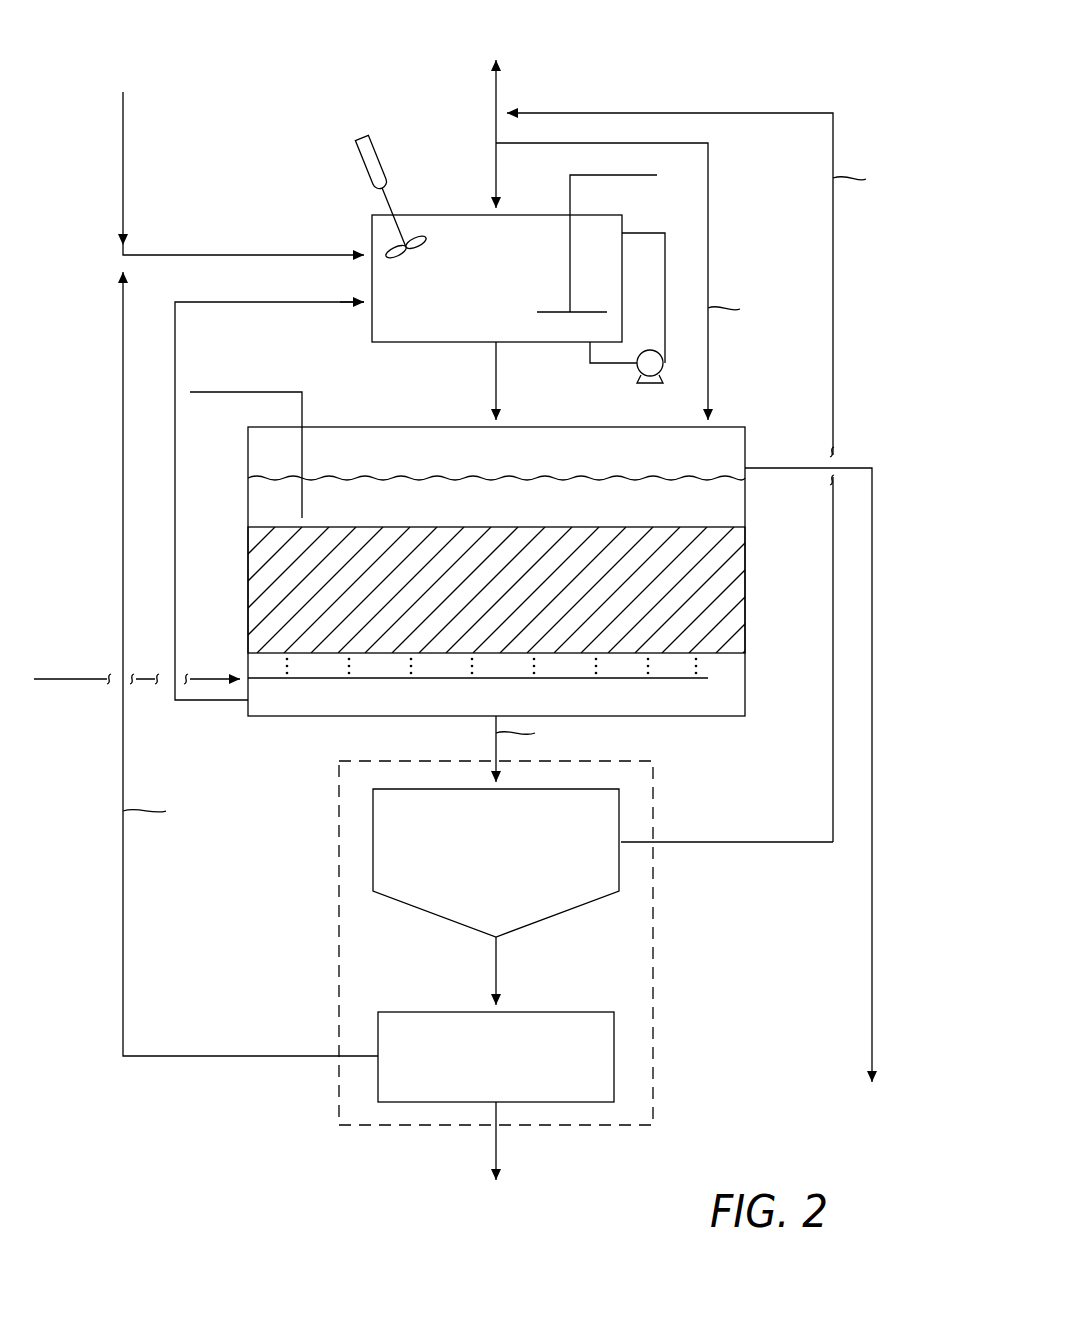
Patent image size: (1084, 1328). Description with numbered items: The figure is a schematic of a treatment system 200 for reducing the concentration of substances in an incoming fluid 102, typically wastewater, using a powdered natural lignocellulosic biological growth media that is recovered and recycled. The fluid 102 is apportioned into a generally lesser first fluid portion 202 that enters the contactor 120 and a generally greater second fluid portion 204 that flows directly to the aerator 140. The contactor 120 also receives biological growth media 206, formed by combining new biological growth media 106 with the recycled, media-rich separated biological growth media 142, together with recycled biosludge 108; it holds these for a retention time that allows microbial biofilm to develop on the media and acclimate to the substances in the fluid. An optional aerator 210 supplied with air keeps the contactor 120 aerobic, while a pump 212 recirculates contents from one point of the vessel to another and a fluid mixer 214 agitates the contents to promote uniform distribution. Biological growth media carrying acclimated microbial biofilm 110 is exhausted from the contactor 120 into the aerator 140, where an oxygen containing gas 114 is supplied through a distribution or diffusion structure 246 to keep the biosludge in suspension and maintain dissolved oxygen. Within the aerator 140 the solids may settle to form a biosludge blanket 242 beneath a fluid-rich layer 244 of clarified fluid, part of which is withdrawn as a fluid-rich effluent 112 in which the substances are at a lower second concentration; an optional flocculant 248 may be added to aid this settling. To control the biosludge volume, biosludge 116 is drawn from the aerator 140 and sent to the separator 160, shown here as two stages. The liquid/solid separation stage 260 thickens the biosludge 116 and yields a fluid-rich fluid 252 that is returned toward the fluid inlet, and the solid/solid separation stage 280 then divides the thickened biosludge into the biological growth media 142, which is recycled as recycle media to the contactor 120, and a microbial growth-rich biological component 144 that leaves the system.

The treatment system 200 is at (772, 80).
The fluid 102 is at (496, 87).
The new biological growth media 106 is at (123, 127).
The biological growth media 206 is at (235, 254).
The first fluid portion 202 is at (494, 166).
The second fluid portion 204 is at (708, 193).
The aerator 210 is at (568, 188).
The fluid-rich fluid 252 is at (833, 235).
The contactor 120 is at (510, 336).
The fluid mixer 214 is at (382, 158).
The recycled biosludge 108 is at (330, 303).
The flocculant 248 is at (302, 408).
The biological growth media with acclimated microbial biofilm 110 is at (496, 375).
The pump 212 is at (646, 384).
The aerator 140 is at (510, 518).
The fluid-rich layer 244 is at (700, 515).
The biosludge blanket 242 is at (700, 604).
The distribution or diffusion structure 246 is at (686, 680).
The oxygen containing gas 114 is at (75, 682).
The biosludge 116 is at (496, 745).
The separator 160 is at (662, 977).
The liquid/solid separation stage 260 is at (510, 898).
The solid/solid separation stage 280 is at (510, 1096).
The biological growth media 142 is at (251, 1056).
The microbial growth-rich biological component 144 is at (455, 1148).
The fluid-rich effluent 112 is at (872, 1023).